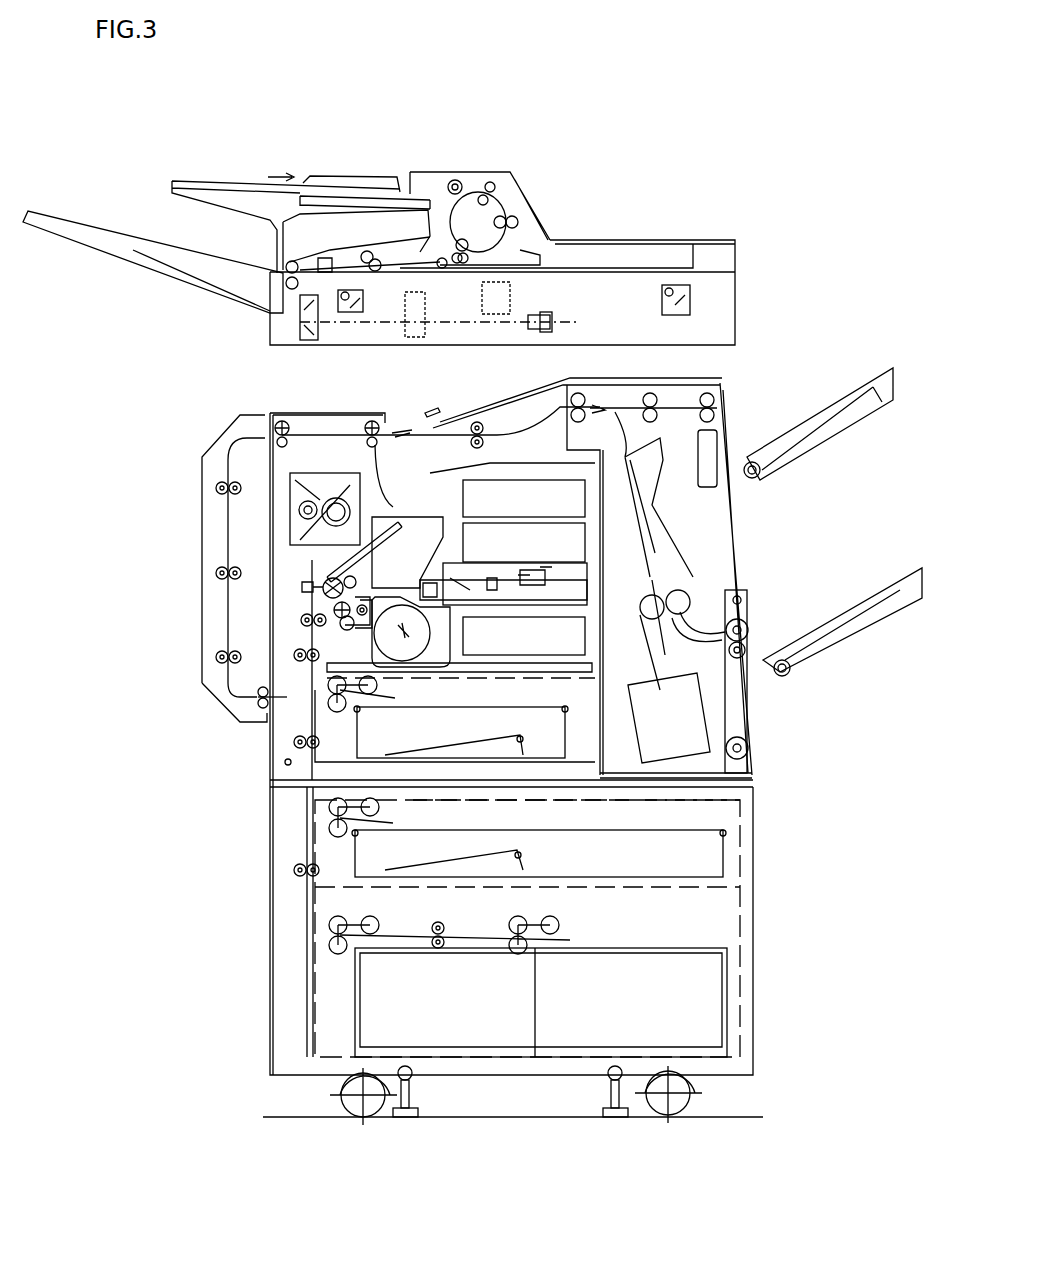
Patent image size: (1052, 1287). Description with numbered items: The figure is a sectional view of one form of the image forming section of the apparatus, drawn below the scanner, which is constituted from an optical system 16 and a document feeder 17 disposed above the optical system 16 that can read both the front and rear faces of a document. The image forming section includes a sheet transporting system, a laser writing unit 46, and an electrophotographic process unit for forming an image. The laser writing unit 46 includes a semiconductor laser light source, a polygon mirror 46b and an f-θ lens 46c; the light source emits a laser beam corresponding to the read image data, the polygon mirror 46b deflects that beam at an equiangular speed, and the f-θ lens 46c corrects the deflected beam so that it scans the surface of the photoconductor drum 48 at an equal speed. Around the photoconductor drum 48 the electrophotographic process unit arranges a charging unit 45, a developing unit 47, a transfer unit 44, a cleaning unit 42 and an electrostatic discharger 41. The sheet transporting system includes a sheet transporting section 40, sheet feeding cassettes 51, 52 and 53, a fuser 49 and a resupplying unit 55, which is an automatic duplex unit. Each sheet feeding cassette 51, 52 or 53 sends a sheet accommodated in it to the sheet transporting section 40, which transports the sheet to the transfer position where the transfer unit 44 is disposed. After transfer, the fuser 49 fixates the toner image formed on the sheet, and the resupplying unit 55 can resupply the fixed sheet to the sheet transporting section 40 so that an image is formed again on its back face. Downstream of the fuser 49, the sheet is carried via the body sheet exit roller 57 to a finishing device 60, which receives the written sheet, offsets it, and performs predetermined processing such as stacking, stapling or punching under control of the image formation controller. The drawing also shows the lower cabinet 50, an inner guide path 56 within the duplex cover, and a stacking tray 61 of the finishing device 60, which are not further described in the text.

The optical system 16 is at (732, 298).
The document feeder 17 is at (520, 200).
The sheet transporting section 40 is at (307, 640).
The electrostatic discharger 41 is at (357, 572).
The cleaning unit 42 is at (317, 573).
The transfer unit 44 is at (297, 578).
The charging unit 45 is at (363, 583).
The laser writing unit 46 is at (453, 563).
The polygon mirror 46b is at (533, 570).
The f-θ lens 46c is at (443, 608).
The developing unit 47 is at (363, 633).
The photoconductor drum 48 is at (310, 610).
The fuser 49 is at (360, 487).
The printer body 50 is at (307, 820).
The sheet feeding cassette 51 is at (460, 710).
The sheet feeding cassette 52 is at (543, 845).
The sheet feeding cassette 53 is at (605, 958).
The resupplying unit 55 is at (213, 438).
The paper conveying path 56 is at (227, 470).
The body sheet exit roller 57 is at (367, 418).
The finishing device 60 is at (720, 390).
The stacking tray 61 is at (698, 742).